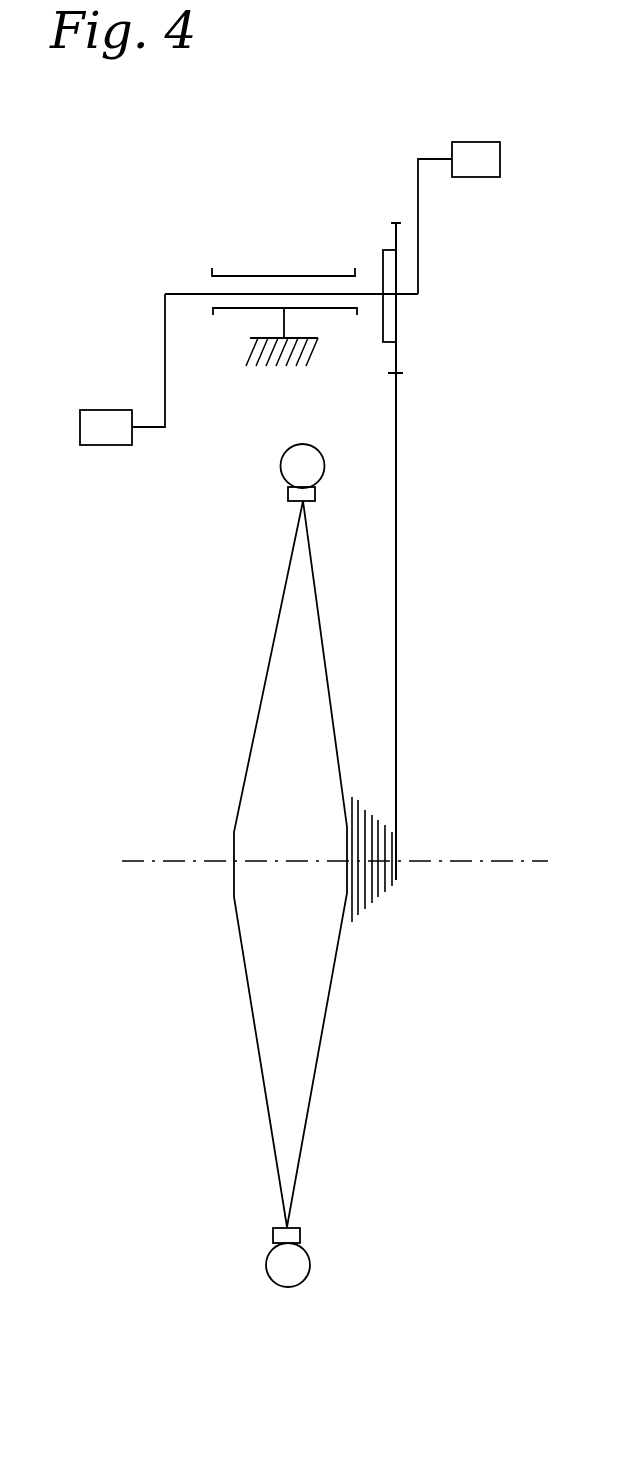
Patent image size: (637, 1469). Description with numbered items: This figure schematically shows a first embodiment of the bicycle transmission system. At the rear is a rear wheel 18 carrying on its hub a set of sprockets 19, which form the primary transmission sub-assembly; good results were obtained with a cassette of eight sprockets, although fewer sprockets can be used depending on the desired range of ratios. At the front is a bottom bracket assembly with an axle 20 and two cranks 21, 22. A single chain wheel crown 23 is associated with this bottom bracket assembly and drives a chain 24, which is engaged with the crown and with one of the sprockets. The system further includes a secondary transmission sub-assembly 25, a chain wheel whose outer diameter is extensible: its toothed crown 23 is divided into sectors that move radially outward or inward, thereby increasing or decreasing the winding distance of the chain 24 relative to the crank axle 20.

The rear wheel 18 is at (303, 1142).
The set of sprockets 19 is at (378, 898).
The axle 20 is at (409, 296).
The crank 21 is at (420, 246).
The crank 22 is at (165, 372).
The chain wheel crown 23 is at (396, 363).
The chain 24 is at (398, 646).
The secondary transmission sub-assembly 25 is at (358, 248).